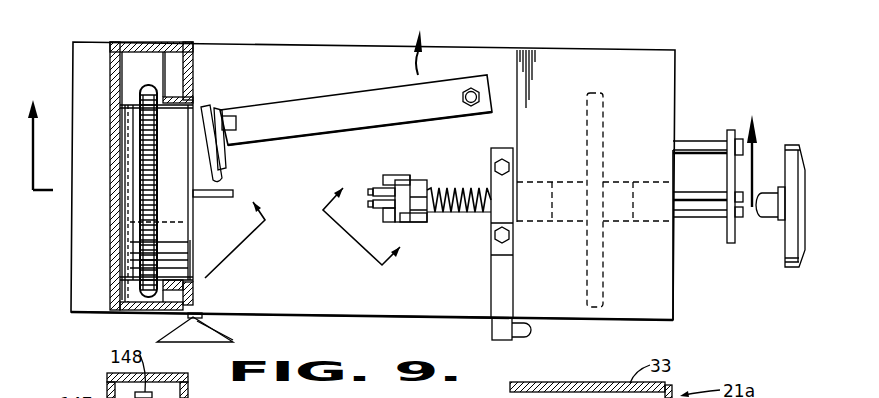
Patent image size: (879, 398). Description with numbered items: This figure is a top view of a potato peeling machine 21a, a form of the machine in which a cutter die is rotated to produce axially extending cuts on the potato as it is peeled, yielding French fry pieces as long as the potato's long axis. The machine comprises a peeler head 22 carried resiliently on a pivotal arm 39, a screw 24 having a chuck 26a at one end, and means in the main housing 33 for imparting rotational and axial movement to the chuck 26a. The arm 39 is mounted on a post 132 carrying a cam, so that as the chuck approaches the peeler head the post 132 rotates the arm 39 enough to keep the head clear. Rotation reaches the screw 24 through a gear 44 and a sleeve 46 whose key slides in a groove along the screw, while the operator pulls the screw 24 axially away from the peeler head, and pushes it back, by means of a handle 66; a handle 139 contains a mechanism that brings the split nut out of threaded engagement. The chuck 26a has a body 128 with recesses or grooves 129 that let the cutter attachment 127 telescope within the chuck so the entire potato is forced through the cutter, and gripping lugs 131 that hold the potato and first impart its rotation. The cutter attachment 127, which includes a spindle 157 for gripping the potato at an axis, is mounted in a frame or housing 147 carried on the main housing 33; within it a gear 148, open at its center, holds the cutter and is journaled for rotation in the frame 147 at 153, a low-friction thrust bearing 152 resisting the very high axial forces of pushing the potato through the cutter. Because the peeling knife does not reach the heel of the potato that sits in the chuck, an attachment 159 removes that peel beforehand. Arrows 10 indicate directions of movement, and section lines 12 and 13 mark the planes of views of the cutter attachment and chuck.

The direction arrow 10 is at (396, 143).
The section line 12 is at (235, 240).
The section line 13 is at (359, 226).
The potato peeling machine 21a is at (680, 68).
The peeler head 22 is at (216, 98).
The screw 24 is at (448, 188).
The chuck 26a is at (393, 170).
The housing 33 is at (673, 282).
The pivotal arm 39 is at (300, 103).
The gear 44 is at (605, 134).
The sleeve 46 is at (613, 182).
The handle 66 is at (790, 268).
The cutter attachment 127 is at (112, 222).
The body 128 is at (418, 222).
The recesses or grooves 129 is at (398, 218).
The gripping lugs 131 is at (378, 190).
The post 132 is at (470, 90).
The handle 139 is at (530, 330).
The frame or housing 147 is at (178, 42).
The gear 148 is at (148, 85).
The thrust bearing 152 is at (123, 260).
The journal 153 is at (200, 277).
The spindle 157 is at (235, 193).
The attachment 159 is at (222, 328).